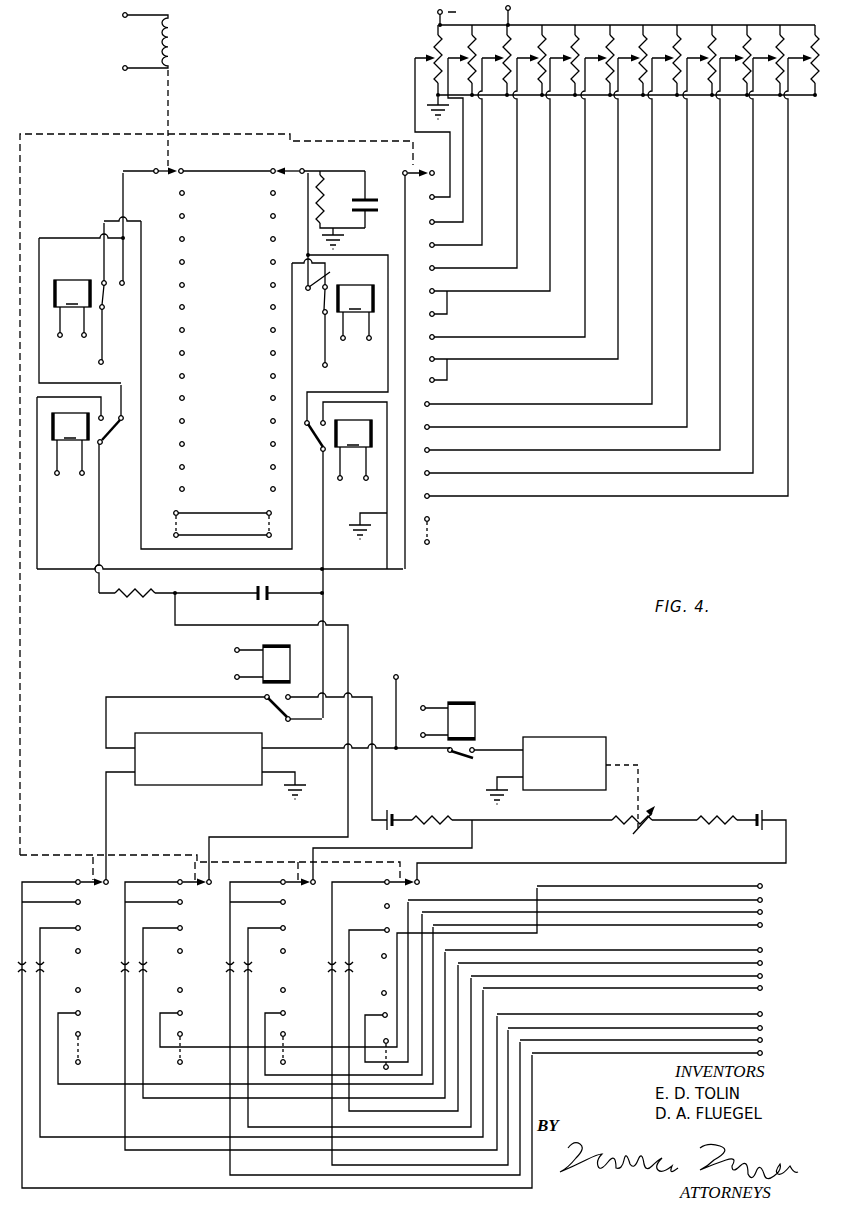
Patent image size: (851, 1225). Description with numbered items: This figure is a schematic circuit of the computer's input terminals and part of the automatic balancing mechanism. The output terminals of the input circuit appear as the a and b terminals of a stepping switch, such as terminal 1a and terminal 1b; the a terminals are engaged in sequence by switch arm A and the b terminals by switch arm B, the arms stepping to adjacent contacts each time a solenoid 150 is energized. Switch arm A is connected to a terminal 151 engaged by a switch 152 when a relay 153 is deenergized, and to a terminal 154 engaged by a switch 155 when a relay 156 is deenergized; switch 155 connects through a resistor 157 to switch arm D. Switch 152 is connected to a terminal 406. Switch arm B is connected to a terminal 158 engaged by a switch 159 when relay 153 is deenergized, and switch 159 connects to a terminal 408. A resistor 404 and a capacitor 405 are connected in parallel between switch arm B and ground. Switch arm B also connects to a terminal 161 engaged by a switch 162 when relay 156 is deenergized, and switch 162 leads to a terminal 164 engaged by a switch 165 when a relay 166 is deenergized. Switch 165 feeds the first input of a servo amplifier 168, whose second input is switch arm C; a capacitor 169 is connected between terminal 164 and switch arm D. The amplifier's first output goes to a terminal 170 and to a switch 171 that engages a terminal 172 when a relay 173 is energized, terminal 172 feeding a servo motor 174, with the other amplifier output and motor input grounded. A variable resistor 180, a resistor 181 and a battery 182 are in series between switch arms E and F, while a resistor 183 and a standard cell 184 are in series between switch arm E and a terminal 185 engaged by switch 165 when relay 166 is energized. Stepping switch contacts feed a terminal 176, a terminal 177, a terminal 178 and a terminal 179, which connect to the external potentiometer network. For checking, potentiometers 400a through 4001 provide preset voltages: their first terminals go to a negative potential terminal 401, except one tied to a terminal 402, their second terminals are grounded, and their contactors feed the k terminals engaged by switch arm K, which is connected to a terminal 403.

The solenoid 150 is at (177, 50).
The negative potential terminal 401 is at (438, 12).
The terminal 402 is at (512, 6).
The potentiometer 400a is at (782, 37).
The potentiometer 4001 is at (813, 33).
The resistor 404 is at (322, 178).
The capacitor 405 is at (378, 207).
The switch arm K is at (408, 171).
The switch arm A is at (164, 176).
The switch arm B is at (300, 176).
The a terminal 1a is at (182, 171).
The b terminal 1b is at (271, 168).
The terminal 151 is at (124, 283).
The switch 152 is at (106, 290).
The relay 153 is at (214, 310).
The terminal 406 is at (98, 364).
The terminal 403 is at (99, 417).
The relay 156 is at (212, 446).
The terminal 154 is at (122, 420).
The switch 155 is at (105, 447).
The terminal 158 is at (330, 275).
The switch 159 is at (323, 310).
The terminal 408 is at (327, 367).
The terminal 161 is at (309, 420).
The switch 162 is at (310, 442).
The resistor 157 is at (135, 602).
The capacitor 169 is at (256, 593).
The relay 166 is at (263, 666).
The terminal 185 is at (290, 695).
The switch 165 is at (271, 710).
The terminal 164 is at (289, 723).
The servo amplifier 168 is at (190, 787).
The terminal 170 is at (398, 676).
The relay 173 is at (468, 709).
The switch 171 is at (457, 764).
The terminal 172 is at (477, 748).
The servo motor 174 is at (592, 737).
The standard cell 184 is at (390, 811).
The resistor 183 is at (430, 826).
The variable resistor 180 is at (640, 827).
The resistor 181 is at (712, 820).
The battery 182 is at (760, 831).
The switch arm C is at (101, 890).
The switch arm D is at (204, 890).
The switch arm E is at (308, 890).
The switch arm F is at (414, 880).
The terminal 176 is at (663, 1055).
The terminal 177 is at (657, 1040).
The terminal 178 is at (651, 1028).
The terminal 179 is at (646, 1014).